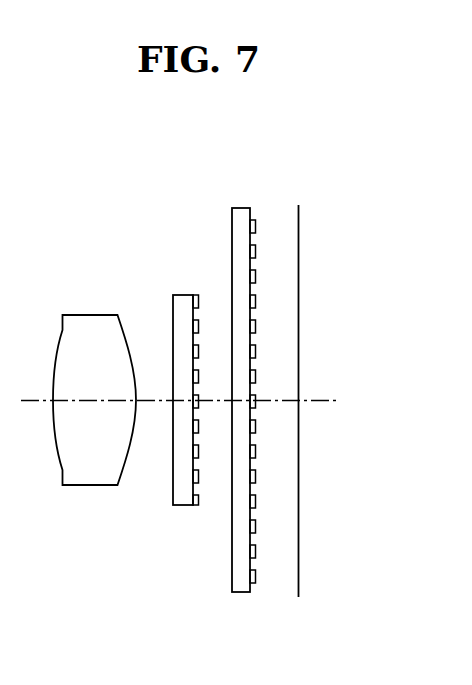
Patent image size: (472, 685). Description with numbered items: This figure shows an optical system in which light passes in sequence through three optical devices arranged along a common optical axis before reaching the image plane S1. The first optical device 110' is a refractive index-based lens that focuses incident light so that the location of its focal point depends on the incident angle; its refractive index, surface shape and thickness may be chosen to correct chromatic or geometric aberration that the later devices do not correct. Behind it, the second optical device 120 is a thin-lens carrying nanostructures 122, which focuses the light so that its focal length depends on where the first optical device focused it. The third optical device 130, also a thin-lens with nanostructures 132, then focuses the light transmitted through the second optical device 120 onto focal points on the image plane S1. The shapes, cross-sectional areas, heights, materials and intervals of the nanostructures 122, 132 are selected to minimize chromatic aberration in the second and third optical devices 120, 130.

The first optical device 110' is at (94, 375).
The second optical device 120 is at (182, 280).
The nanostructures 122 is at (196, 504).
The third optical device 130 is at (240, 195).
The nanostructures 132 is at (254, 583).
The image plane S1 is at (299, 223).